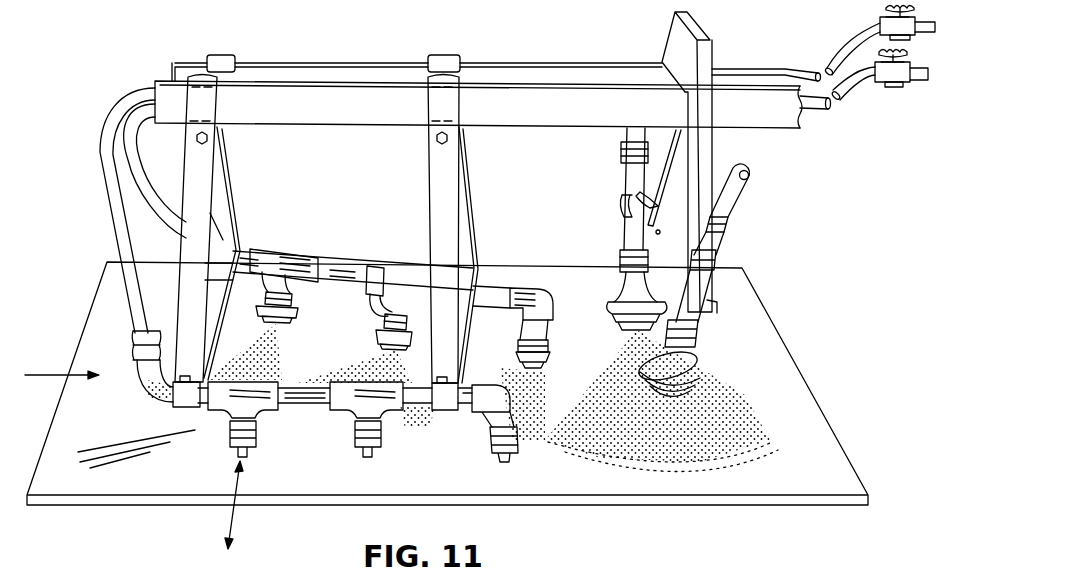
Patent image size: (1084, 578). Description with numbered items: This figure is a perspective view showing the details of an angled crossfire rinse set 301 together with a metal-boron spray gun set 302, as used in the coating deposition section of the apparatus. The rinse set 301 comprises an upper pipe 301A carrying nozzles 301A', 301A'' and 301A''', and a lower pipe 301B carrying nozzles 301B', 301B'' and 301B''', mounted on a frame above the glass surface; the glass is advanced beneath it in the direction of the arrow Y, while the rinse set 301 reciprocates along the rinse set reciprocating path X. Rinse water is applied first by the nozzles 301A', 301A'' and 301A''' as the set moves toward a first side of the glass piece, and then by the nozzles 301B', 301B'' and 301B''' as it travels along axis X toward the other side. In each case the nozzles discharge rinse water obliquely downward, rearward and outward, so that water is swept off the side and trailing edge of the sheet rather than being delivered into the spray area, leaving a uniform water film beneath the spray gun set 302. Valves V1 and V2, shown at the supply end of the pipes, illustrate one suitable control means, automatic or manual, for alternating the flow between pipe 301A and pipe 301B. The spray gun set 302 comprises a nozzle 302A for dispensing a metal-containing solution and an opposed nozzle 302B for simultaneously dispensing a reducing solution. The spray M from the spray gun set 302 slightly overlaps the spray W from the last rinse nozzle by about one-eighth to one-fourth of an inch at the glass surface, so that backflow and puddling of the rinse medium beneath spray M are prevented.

The rinse set 301 is at (340, 171).
The pipe 301A is at (371, 260).
The nozzle 301A' is at (304, 290).
The nozzle 301A'' is at (372, 291).
The nozzle 301A''' is at (516, 304).
The pipe 301B is at (335, 416).
The nozzle 301B' is at (196, 452).
The nozzle 301B'' is at (396, 456).
The nozzle 301B''' is at (530, 439).
The spray gun set 302 is at (793, 213).
The nozzle 302A is at (632, 292).
The nozzle 302B is at (690, 368).
The valve V1 is at (878, 25).
The valve V2 is at (900, 86).
The spray W is at (517, 372).
The spray M is at (585, 367).
The rinse set reciprocating path X is at (240, 512).
The direction of glass advance Y is at (48, 375).